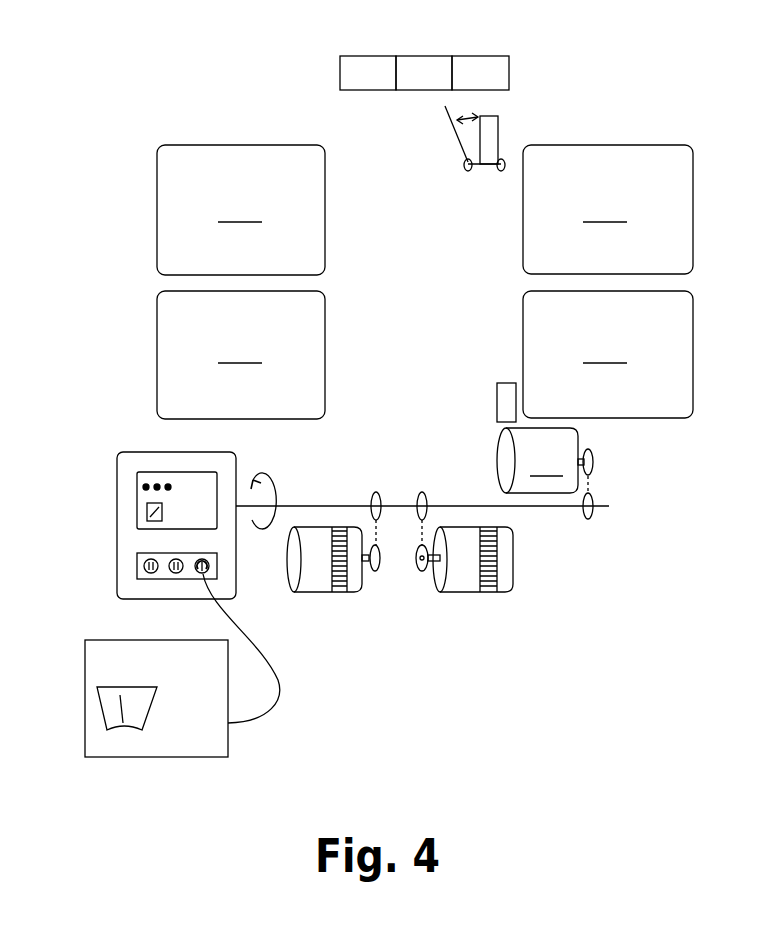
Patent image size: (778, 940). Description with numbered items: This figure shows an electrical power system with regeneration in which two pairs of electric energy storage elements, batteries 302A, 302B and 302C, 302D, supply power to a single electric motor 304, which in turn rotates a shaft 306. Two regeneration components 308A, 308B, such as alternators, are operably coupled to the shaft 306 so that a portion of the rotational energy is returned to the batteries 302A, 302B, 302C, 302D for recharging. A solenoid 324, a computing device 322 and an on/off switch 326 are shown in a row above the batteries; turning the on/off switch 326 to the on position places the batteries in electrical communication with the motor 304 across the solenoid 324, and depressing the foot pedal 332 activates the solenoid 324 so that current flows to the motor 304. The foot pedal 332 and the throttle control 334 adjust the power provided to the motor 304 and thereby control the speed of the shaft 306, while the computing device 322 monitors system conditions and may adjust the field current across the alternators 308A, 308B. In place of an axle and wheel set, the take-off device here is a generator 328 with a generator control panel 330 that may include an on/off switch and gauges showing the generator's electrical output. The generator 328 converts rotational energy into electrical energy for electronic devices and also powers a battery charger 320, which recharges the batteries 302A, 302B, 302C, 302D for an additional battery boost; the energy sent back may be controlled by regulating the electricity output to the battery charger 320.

The solenoid 324 is at (368, 64).
The computing device 322 is at (426, 64).
The on/off switch 326 is at (481, 64).
The foot pedal 332 is at (499, 122).
The electric energy storage element 302A is at (241, 210).
The electric energy storage element 302B is at (241, 355).
The electric energy storage element 302C is at (608, 209).
The electric energy storage element 302D is at (608, 354).
The throttle control 334 is at (497, 421).
The motor 304 is at (545, 460).
The shaft 306 is at (562, 508).
The regeneration component 308A is at (318, 582).
The regeneration component 308B is at (465, 582).
The generator control panel 330 is at (192, 483).
The generator 328 is at (136, 495).
The battery charger 320 is at (180, 758).